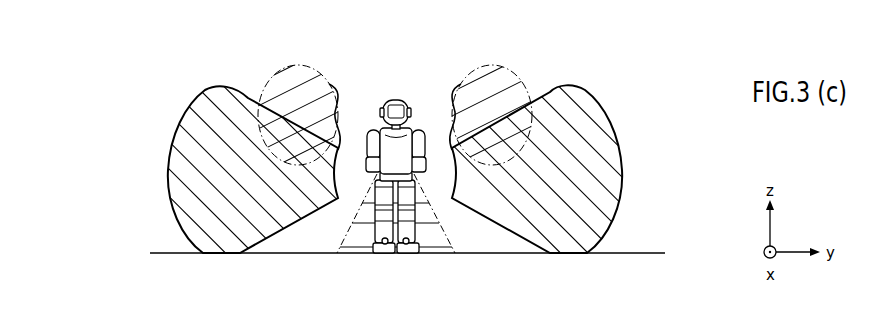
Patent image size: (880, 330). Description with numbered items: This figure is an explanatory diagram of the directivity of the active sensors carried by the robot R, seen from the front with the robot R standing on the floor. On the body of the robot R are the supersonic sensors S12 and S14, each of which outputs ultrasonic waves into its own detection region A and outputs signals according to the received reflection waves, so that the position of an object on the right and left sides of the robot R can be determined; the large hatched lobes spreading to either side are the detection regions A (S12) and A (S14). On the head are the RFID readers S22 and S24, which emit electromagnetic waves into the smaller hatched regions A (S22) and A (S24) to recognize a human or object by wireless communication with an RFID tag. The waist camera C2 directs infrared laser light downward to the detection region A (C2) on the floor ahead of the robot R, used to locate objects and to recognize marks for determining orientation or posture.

The detection region A is at (408, 155).
The supersonic sensor S12 is at (197, 127).
The supersonic sensor S14 is at (603, 127).
The RFID reader S22 is at (384, 118).
The RFID reader S24 is at (518, 80).
The waist camera C2 is at (433, 247).
The robot R is at (415, 83).